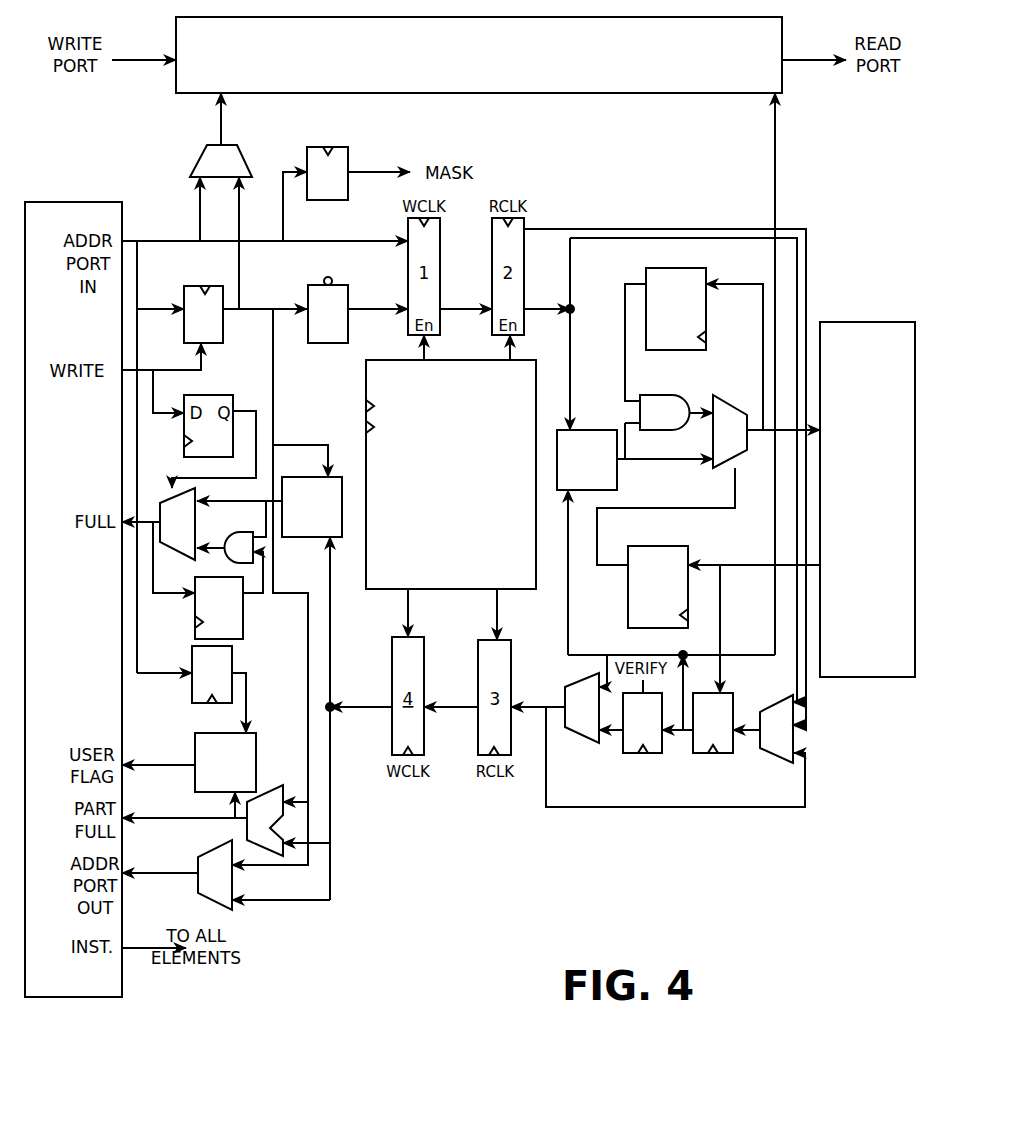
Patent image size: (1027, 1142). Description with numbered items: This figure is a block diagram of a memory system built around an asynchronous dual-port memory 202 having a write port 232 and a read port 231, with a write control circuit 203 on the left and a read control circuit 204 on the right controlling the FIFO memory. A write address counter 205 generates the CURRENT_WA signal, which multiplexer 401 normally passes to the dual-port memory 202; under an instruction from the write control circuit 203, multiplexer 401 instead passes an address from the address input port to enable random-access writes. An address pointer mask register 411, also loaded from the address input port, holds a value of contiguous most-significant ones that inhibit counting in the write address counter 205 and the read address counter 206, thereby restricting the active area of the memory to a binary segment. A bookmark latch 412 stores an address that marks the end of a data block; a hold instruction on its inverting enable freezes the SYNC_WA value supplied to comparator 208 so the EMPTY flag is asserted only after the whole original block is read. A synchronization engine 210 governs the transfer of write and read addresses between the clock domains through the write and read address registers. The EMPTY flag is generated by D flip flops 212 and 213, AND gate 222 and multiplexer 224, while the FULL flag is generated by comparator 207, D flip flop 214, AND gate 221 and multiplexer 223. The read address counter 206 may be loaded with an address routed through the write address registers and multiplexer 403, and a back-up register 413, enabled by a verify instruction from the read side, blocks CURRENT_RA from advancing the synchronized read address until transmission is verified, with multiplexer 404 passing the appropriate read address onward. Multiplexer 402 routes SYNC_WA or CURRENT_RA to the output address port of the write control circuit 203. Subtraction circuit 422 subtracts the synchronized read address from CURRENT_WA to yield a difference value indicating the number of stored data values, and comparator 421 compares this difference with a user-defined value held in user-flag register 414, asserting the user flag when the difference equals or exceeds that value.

The asynchronous dual-port memory 202 is at (479, 55).
The write port 232 is at (144, 48).
The read port 231 is at (814, 48).
The write control circuit 203 is at (73, 599).
The read control circuit 204 is at (867, 499).
The multiplexer 401 is at (221, 201).
The address pointer mask register 411 is at (346, 183).
The bookmark latch 412 is at (358, 300).
The write address counter 205 is at (222, 305).
The synchronization engine 210 is at (438, 487).
The comparator 207 is at (269, 507).
The comparator 208 is at (635, 542).
The D flip flop 212 is at (694, 349).
The D flip flop 213 is at (724, 587).
The D flip flop 214 is at (193, 608).
The AND gate 221 is at (230, 562).
The AND gate 222 is at (676, 412).
The multiplexer 223 is at (158, 524).
The multiplexer 224 is at (708, 480).
The read address counter 206 is at (697, 735).
The multiplexer 403 is at (763, 729).
The multiplexer 404 is at (555, 708).
The back-up register 413 is at (631, 735).
The user-flag register 414 is at (191, 689).
The comparator 421 is at (189, 775).
The subtraction circuit 422 is at (266, 797).
The multiplexer 402 is at (177, 875).